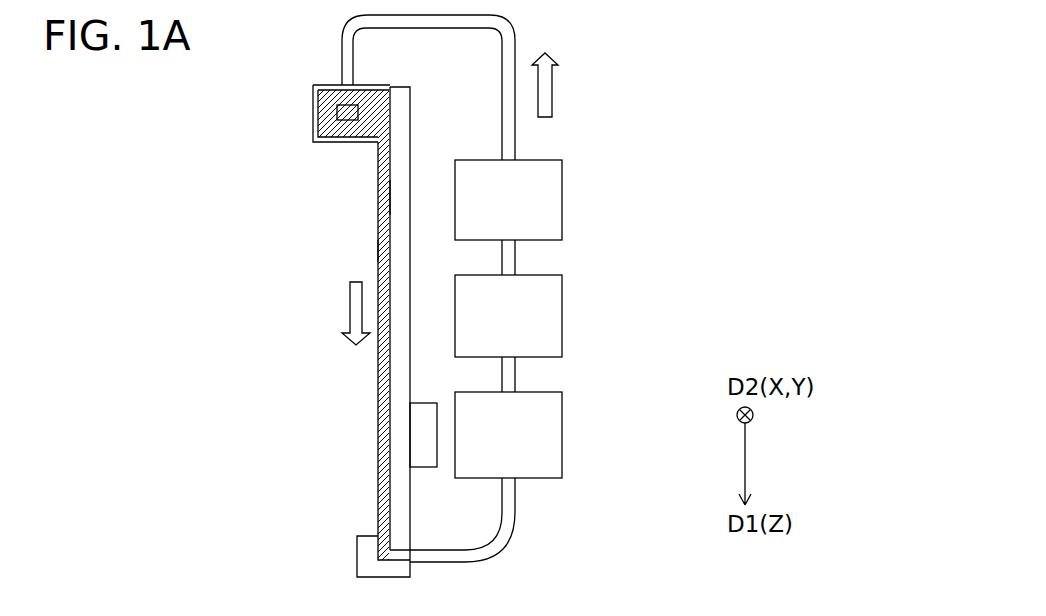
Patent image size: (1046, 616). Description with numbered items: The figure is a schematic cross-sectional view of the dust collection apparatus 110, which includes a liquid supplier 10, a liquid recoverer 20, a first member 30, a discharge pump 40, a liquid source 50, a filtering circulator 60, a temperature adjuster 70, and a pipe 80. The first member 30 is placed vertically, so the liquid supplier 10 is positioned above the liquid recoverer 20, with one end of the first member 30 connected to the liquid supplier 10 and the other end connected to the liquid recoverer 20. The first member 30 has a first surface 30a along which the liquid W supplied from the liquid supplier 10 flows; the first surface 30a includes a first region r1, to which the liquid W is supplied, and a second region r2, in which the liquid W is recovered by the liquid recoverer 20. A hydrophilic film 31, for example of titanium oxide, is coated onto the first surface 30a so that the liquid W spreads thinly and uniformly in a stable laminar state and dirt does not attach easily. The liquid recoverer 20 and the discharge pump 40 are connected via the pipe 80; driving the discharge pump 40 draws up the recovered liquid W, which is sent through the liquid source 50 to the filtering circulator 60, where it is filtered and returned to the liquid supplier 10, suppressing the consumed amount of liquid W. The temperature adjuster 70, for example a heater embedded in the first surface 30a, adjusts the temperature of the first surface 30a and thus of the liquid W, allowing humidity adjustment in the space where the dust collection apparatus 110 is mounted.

The dust collection apparatus 110 is at (614, 74).
The liquid supplier 10 is at (312, 111).
The liquid recoverer 20 is at (362, 556).
The first member 30 is at (401, 97).
The first surface 30a is at (388, 197).
The film 31 is at (378, 250).
The liquid W is at (377, 212).
The discharge pump 40 is at (562, 430).
The liquid source 50 is at (562, 312).
The filtering circulator 60 is at (562, 197).
The temperature adjuster 70 is at (426, 454).
The pipe 80 is at (507, 535).
The first region r1 is at (378, 145).
The second region r2 is at (387, 550).